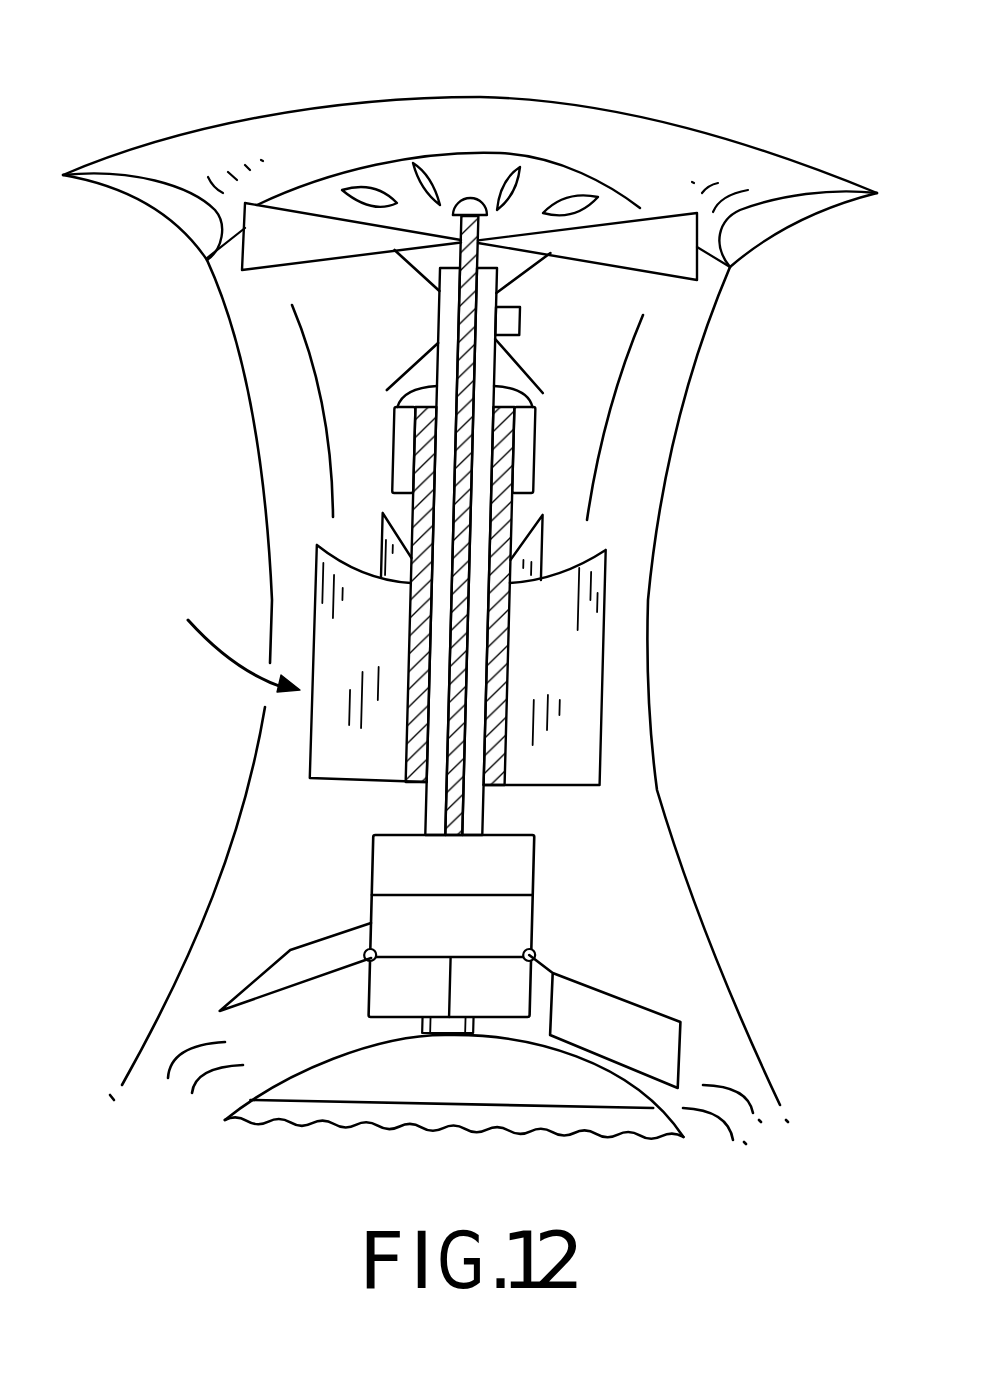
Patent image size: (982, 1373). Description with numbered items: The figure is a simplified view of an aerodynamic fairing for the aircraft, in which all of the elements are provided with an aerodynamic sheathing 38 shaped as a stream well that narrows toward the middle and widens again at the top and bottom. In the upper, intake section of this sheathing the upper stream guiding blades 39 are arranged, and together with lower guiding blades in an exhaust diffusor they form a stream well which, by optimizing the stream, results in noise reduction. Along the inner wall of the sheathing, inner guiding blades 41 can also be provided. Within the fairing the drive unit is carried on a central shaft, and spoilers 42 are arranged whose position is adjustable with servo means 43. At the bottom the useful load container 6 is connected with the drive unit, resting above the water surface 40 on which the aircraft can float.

The useful load container 6 is at (468, 1090).
The duct wall 38 is at (260, 452).
The upper stream guiding blades 39 is at (507, 160).
The water surface 40 is at (193, 1057).
The inner guiding blades 41 is at (610, 397).
The spoilers 42 is at (407, 370).
The servo means 43 is at (520, 320).